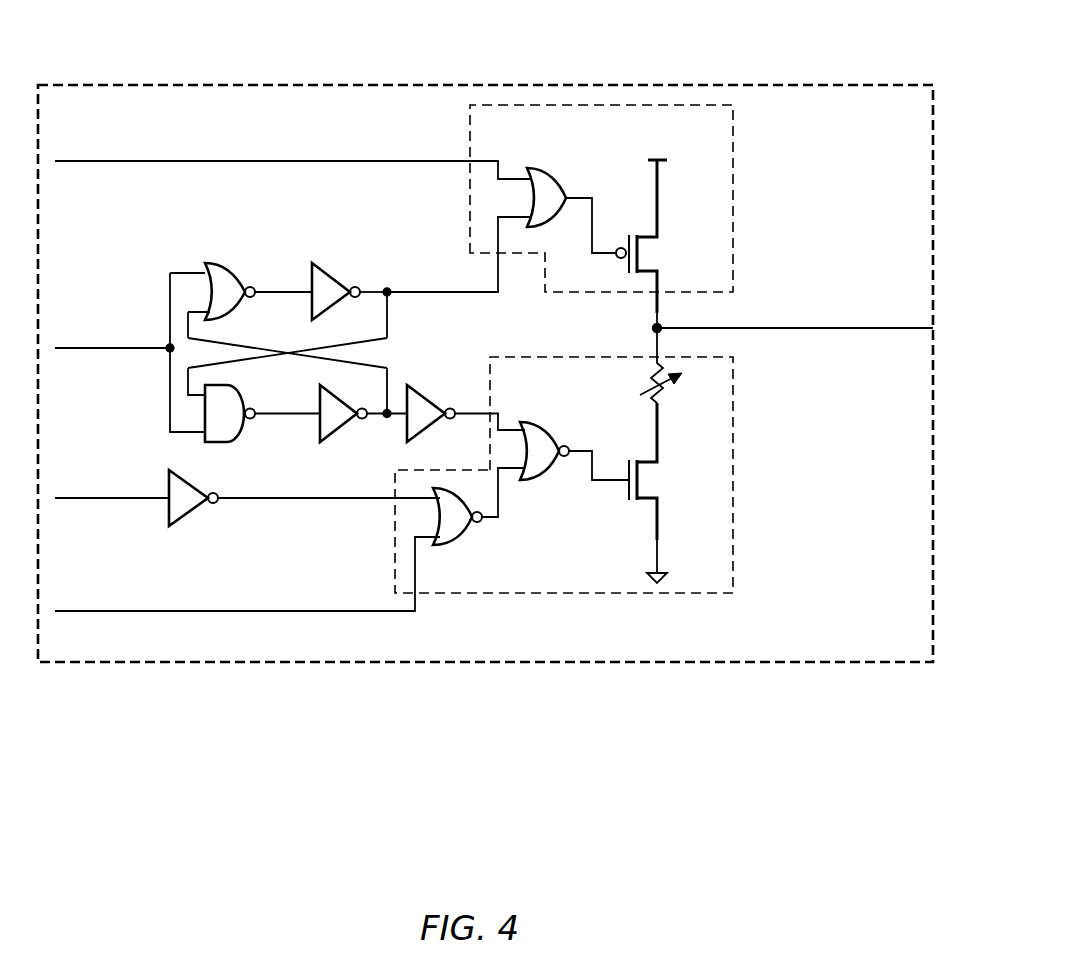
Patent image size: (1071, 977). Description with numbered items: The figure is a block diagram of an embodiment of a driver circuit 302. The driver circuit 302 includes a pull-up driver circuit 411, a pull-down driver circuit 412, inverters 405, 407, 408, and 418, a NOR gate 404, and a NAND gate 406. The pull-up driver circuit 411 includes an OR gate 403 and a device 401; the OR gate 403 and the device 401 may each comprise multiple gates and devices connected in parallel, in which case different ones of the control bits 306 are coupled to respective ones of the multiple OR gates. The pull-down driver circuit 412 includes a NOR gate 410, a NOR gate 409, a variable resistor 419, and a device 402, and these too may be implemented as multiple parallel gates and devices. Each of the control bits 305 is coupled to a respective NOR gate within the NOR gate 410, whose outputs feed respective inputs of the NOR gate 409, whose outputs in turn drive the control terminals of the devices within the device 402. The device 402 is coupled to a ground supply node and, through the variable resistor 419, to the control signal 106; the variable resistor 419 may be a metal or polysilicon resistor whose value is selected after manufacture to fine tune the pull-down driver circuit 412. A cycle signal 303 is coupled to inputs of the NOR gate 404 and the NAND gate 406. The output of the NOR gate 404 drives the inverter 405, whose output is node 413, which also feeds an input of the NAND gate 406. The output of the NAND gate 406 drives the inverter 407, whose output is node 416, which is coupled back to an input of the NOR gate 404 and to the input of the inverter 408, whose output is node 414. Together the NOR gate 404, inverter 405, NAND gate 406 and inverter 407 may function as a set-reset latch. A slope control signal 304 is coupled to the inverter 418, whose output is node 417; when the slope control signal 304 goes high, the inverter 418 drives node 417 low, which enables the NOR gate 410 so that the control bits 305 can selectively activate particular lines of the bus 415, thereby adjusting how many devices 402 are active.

The driver circuit 302 is at (268, 85).
The control bits 306 is at (291, 150).
The cycle signal 303 is at (130, 352).
The slope control signal 304 is at (112, 471).
The control bits 305 is at (247, 587).
The control signal 106 is at (793, 317).
The pull-up driver circuit 411 is at (735, 178).
The pull-down driver circuit 412 is at (737, 480).
The device 401 is at (650, 253).
The device 402 is at (650, 480).
The OR gate 403 is at (552, 168).
The NOR gate 404 is at (226, 263).
The inverter 405 is at (332, 263).
The NAND gate 406 is at (232, 442).
The inverter 407 is at (334, 430).
The inverter 408 is at (424, 394).
The NOR gate 409 is at (534, 422).
The NOR gate 410 is at (456, 545).
The node 413 is at (440, 290).
The node 414 is at (466, 408).
The bus 415 is at (598, 482).
The node 416 is at (378, 418).
The node 417 is at (326, 502).
The inverter 418 is at (183, 522).
The variable resistor 419 is at (645, 384).